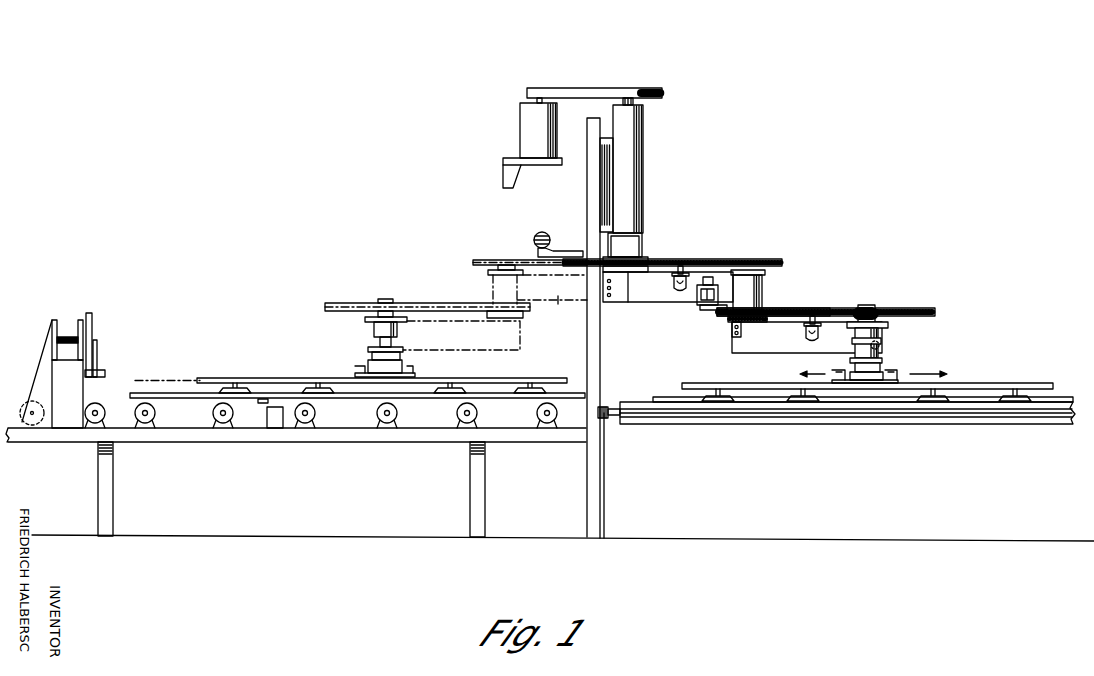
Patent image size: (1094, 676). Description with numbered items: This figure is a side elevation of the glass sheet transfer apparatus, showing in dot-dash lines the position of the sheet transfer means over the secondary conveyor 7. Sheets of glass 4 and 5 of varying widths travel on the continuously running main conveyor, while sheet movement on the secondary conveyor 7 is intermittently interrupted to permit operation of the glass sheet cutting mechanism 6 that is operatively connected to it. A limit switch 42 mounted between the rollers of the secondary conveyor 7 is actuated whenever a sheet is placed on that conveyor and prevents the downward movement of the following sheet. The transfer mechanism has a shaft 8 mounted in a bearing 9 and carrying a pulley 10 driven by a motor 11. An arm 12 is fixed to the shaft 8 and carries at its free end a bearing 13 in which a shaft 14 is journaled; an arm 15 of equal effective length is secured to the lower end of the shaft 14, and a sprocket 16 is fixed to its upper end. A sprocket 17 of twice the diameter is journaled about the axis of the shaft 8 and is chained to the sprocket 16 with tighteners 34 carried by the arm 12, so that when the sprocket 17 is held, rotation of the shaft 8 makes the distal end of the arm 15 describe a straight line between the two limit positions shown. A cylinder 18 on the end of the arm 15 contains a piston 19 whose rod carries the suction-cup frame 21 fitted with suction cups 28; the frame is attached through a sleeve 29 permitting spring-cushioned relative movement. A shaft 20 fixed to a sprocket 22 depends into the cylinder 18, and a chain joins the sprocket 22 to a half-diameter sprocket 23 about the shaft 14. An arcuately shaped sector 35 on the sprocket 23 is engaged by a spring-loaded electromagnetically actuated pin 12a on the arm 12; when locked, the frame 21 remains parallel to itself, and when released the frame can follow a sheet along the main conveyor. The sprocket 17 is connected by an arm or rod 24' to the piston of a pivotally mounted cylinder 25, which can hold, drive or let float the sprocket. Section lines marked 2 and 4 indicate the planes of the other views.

The section line of FIG. 2 is at (127, 30).
The sheet of glass 4 is at (317, 60).
The sheet of glass 5 is at (982, 403).
The glass sheet cutting mechanism 6 is at (95, 328).
The secondary conveyor 7 is at (351, 417).
The shaft 8 is at (636, 103).
The bearing 9 is at (638, 183).
The pulley 10 is at (636, 89).
The motor 11 is at (520, 129).
The arm 12 is at (641, 301).
The pin 12a is at (703, 306).
The bearing 13 is at (761, 293).
The shaft 14 is at (748, 319).
The arm 15 is at (777, 351).
The sprocket 16 is at (778, 260).
The sprocket 17 is at (651, 262).
The cylinder 18 is at (883, 337).
The piston 19 is at (879, 346).
The shaft 20 is at (871, 305).
The suction-cup frame 21 is at (980, 384).
The sprocket 22 is at (907, 309).
The sprocket 23 is at (770, 311).
The arm or rod 24' is at (560, 222).
The cylinder 25 is at (533, 237).
The suction cup 28 is at (932, 392).
The sleeve 29 is at (866, 380).
The tightener 34 is at (683, 268).
The arcuately shaped sector 35 is at (710, 310).
The limit switch 42 is at (258, 402).